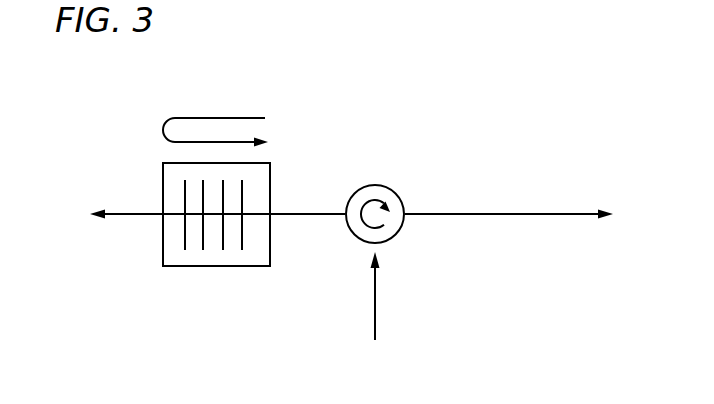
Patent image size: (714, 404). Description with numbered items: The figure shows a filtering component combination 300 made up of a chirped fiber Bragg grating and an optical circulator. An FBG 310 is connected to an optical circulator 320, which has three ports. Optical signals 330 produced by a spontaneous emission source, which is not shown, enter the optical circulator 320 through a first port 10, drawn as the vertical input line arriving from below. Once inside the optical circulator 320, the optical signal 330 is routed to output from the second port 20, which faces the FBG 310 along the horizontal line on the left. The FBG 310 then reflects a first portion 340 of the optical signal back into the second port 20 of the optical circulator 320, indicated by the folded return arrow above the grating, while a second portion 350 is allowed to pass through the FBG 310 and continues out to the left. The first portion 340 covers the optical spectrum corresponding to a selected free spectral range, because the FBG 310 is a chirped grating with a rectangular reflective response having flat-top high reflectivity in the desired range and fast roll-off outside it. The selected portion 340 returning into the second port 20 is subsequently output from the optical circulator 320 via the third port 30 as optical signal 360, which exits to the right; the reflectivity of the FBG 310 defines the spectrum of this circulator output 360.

The optical system 300 is at (506, 110).
The fiber Bragg grating 310 is at (208, 267).
The optical circulator 320 is at (381, 185).
The optical signals 330 is at (377, 302).
The first portion 340 is at (218, 116).
The second portion 350 is at (123, 211).
The optical signal 360 is at (540, 212).
The first port 10 is at (354, 264).
The second port 20 is at (330, 199).
The third port 30 is at (422, 199).